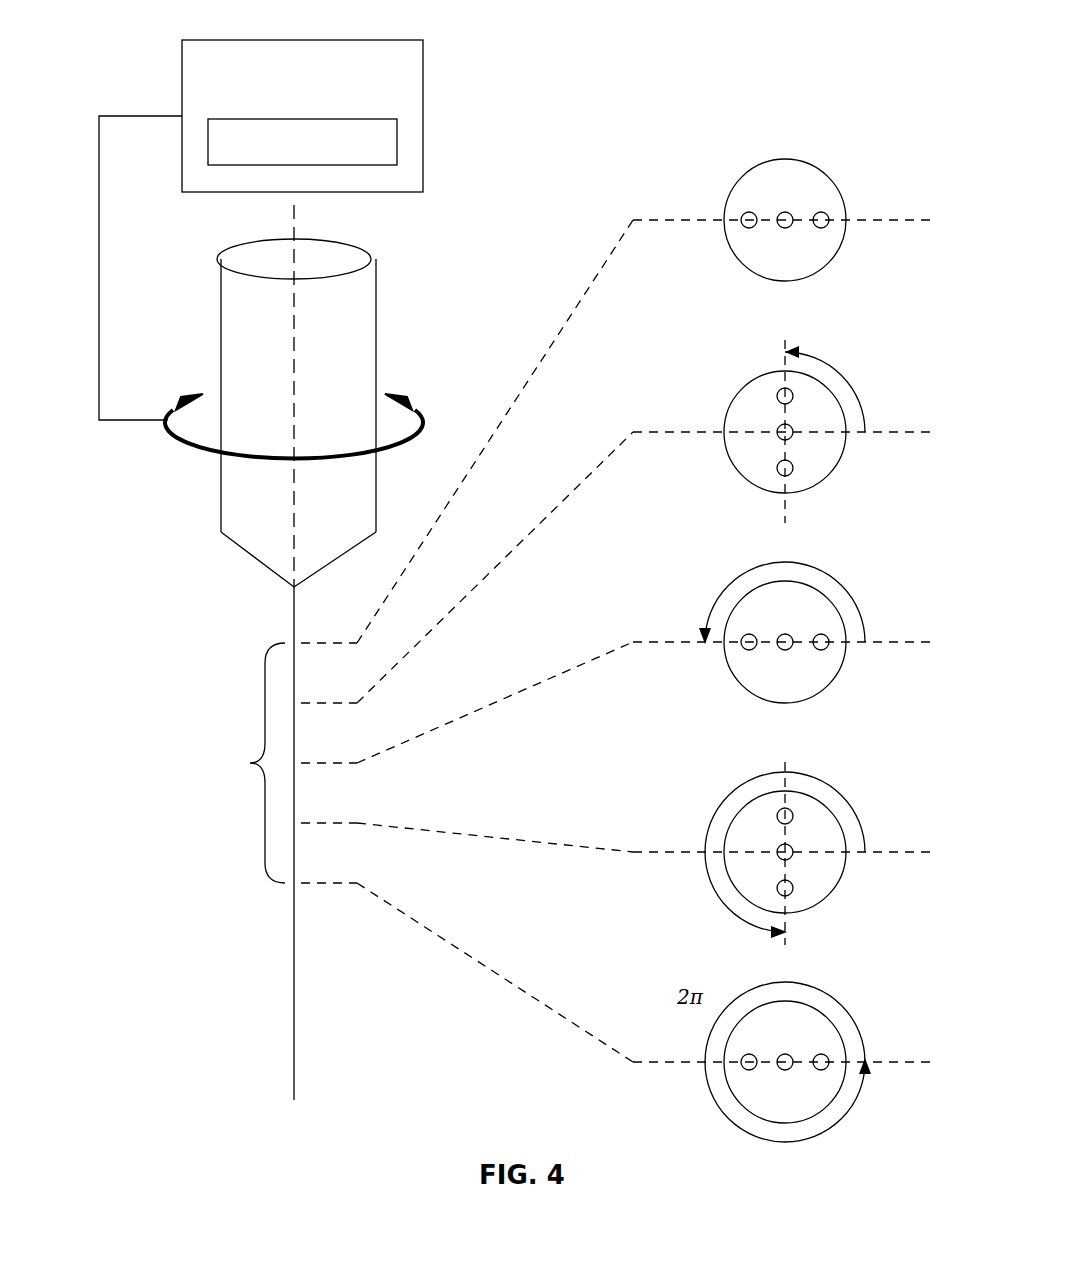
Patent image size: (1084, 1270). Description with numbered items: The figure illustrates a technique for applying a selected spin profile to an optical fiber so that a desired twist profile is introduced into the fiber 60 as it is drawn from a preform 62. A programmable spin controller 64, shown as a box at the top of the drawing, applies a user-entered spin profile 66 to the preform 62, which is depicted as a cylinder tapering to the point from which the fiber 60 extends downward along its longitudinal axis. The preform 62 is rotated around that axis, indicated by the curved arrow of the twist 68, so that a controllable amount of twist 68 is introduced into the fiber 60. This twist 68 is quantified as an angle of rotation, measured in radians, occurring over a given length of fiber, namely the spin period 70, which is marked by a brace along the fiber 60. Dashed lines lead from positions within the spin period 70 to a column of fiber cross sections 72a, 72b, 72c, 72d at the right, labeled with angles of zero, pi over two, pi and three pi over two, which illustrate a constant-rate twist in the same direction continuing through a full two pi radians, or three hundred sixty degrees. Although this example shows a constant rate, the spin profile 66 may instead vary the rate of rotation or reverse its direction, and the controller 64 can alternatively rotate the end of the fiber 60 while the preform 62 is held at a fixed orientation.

The fiber 60 is at (279, 652).
The preform 62 is at (296, 413).
The programmable spin controller 64 is at (261, 230).
The spin profile 66 is at (302, 142).
The twist 68 is at (312, 426).
The spin period 70 is at (261, 763).
The fiber cross section 72a is at (784, 205).
The fiber cross section 72b is at (784, 431).
The fiber cross section 72c is at (784, 627).
The fiber cross section 72d is at (784, 853).